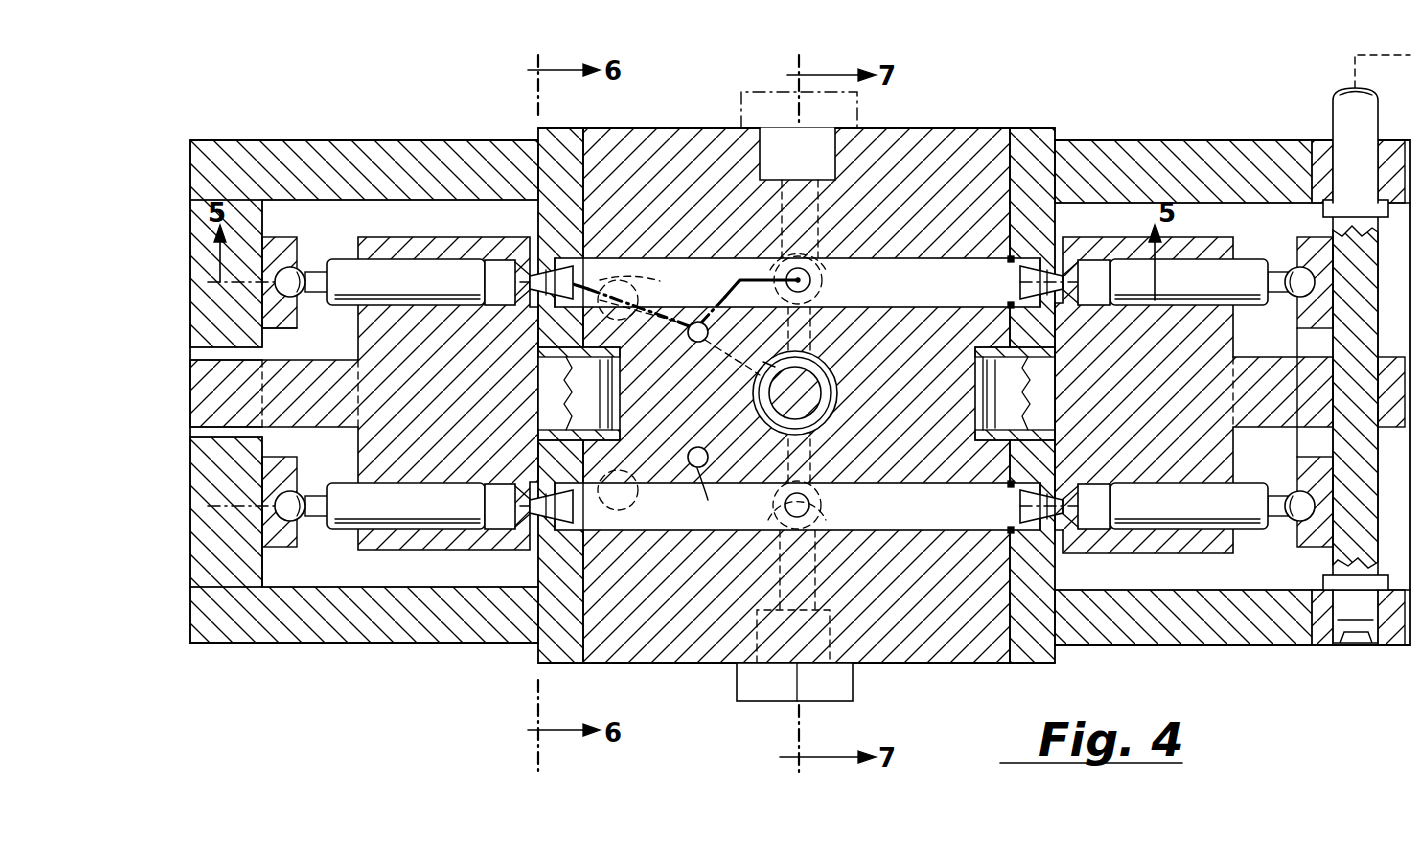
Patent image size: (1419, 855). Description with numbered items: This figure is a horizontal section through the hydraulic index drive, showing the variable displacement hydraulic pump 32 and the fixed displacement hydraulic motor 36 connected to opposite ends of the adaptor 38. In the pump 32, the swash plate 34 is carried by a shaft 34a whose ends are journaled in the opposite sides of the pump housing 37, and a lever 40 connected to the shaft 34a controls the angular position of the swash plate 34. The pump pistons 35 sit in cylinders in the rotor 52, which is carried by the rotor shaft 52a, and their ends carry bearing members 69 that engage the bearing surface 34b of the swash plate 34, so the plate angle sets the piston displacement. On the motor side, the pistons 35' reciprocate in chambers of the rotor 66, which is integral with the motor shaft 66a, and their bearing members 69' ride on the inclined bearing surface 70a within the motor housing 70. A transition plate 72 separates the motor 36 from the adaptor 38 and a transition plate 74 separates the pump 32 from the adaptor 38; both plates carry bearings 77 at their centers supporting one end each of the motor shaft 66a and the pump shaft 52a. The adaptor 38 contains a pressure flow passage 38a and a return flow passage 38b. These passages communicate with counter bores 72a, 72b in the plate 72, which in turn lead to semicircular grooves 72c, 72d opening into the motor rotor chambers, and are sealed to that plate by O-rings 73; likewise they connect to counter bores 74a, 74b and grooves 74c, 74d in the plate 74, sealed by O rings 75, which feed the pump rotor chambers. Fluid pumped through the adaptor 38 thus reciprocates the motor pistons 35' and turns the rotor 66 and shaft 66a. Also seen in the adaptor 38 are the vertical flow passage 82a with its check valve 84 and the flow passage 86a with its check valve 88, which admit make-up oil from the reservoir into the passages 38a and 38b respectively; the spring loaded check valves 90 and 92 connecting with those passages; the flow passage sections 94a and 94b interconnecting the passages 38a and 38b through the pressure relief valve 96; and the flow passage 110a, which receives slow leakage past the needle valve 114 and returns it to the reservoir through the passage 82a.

The variable displacement hydraulic pump 32 is at (1108, 152).
The swash plate 34 is at (1330, 560).
The shaft 34a is at (1345, 118).
The bearing surface 34b is at (1347, 362).
The pistons 35 is at (1167, 422).
The pistons 35' is at (390, 397).
The fixed displacement hydraulic motor 36 is at (421, 157).
The pump housing 37 is at (1200, 152).
The adaptor 38 is at (947, 152).
The flow passage 38a is at (727, 262).
The flow passage 38b is at (688, 531).
The lever 40 is at (1340, 62).
The rotor 52 is at (1162, 410).
The rotor shaft 52a is at (990, 412).
The rotor 66 is at (463, 410).
The motor shaft 66a is at (340, 398).
The bearing members 69 is at (1288, 389).
The bearing members 69' is at (303, 376).
The motor housing 70 is at (313, 157).
The inclined bearing surface 70a is at (262, 567).
The transition plate 72 is at (562, 660).
The counter bore 72a is at (562, 255).
The counter bore 72b is at (548, 533).
The groove 72c is at (560, 272).
The groove 72d is at (555, 525).
The O-rings 73 is at (598, 252).
The transition plate 74 is at (1030, 655).
The counter bore 74a is at (1022, 262).
The counter bore 74b is at (1022, 533).
The groove 74c is at (1012, 292).
The groove 74d is at (1013, 506).
The O rings 75 is at (1006, 255).
The bearings 77 is at (622, 358).
The flow passage 82a is at (703, 345).
The check valve 84 is at (645, 276).
The flow passage 86a is at (700, 468).
The check valve 88 is at (680, 453).
The check valve 90 is at (830, 281).
The spring loaded check valve 92 is at (828, 505).
The flow passage section 94a is at (812, 338).
The flow passage section 94b is at (828, 440).
The pressure relief valve 96 is at (840, 392).
The flow passage 110a is at (708, 348).
The needle valve 114 is at (820, 362).